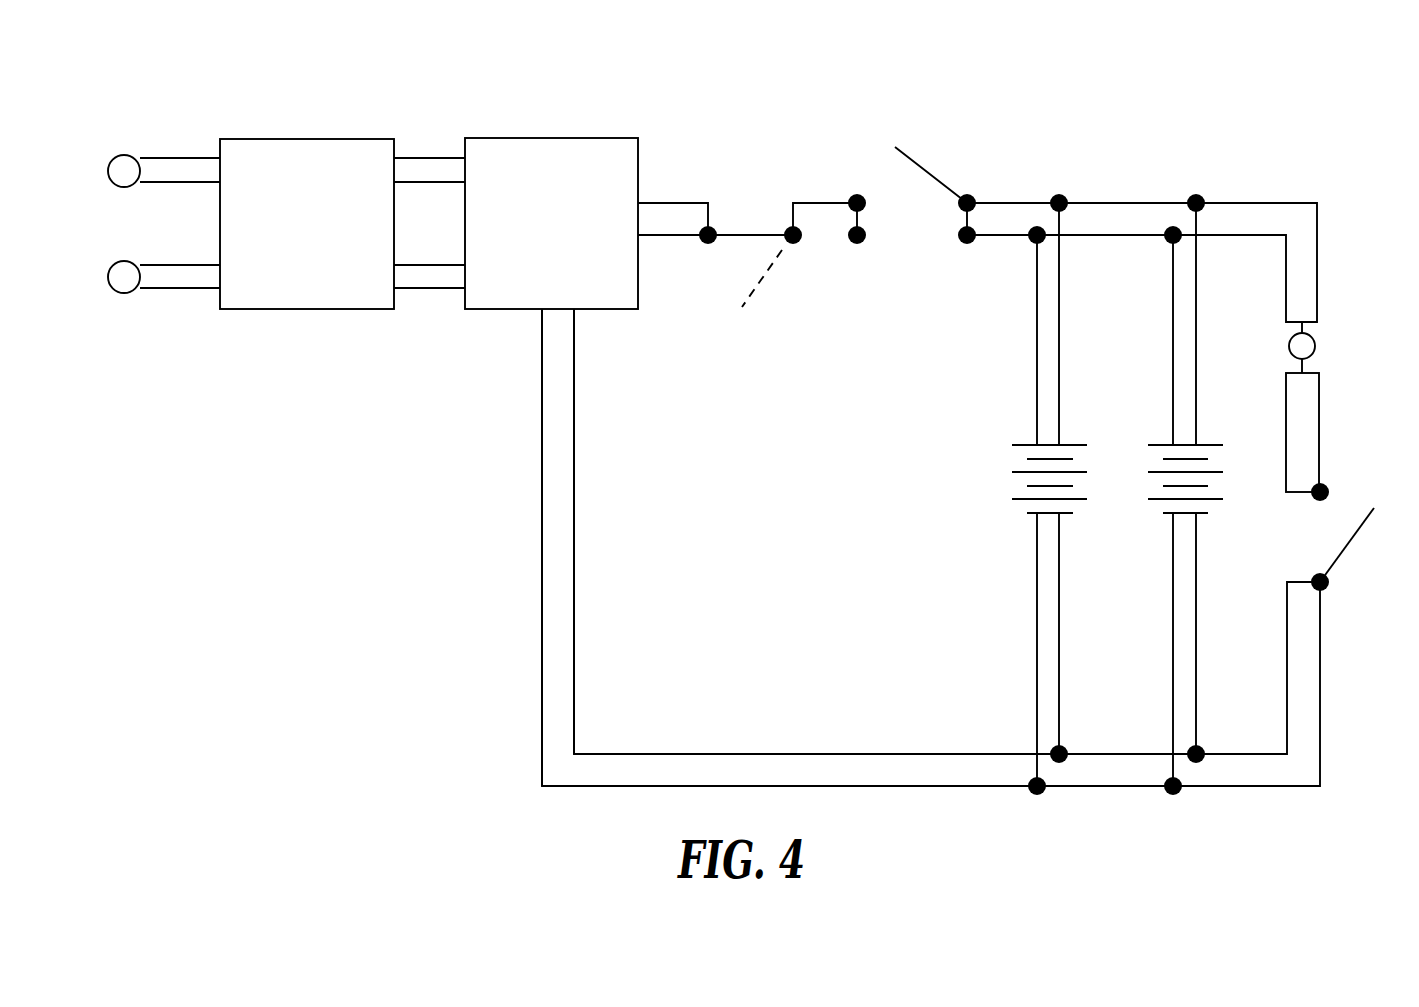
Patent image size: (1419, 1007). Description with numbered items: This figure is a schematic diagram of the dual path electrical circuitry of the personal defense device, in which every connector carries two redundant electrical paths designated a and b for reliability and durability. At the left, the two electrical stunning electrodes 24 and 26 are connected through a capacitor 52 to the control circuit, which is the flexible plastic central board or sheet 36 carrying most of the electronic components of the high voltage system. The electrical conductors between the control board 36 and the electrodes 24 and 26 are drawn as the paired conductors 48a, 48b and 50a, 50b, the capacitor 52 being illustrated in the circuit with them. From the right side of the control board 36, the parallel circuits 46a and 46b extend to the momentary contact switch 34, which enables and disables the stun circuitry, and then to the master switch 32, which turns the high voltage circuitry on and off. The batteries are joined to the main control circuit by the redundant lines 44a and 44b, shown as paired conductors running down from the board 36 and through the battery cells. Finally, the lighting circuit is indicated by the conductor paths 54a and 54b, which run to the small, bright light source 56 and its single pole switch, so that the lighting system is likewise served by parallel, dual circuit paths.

The electrical stunning electrode 24 is at (133, 157).
The electrical stunning electrode 26 is at (123, 291).
The master switch 32 is at (930, 172).
The momentary contact switch 34 is at (750, 234).
The flexible central board 36 is at (515, 138).
The battery circuit path 44a is at (540, 498).
The battery circuit path 44b is at (575, 498).
The switch circuit path 46a is at (668, 237).
The switch circuit path 46b is at (825, 201).
The electrode conductor 48a is at (178, 157).
The electrode conductor 48b is at (157, 187).
The electrode conductor 50a is at (172, 290).
The electrode conductor 50b is at (210, 265).
The capacitor 52 is at (268, 138).
The lighting conductor path 54a is at (1217, 237).
The lighting conductor path 54b is at (1248, 201).
The light source 56 is at (1290, 342).